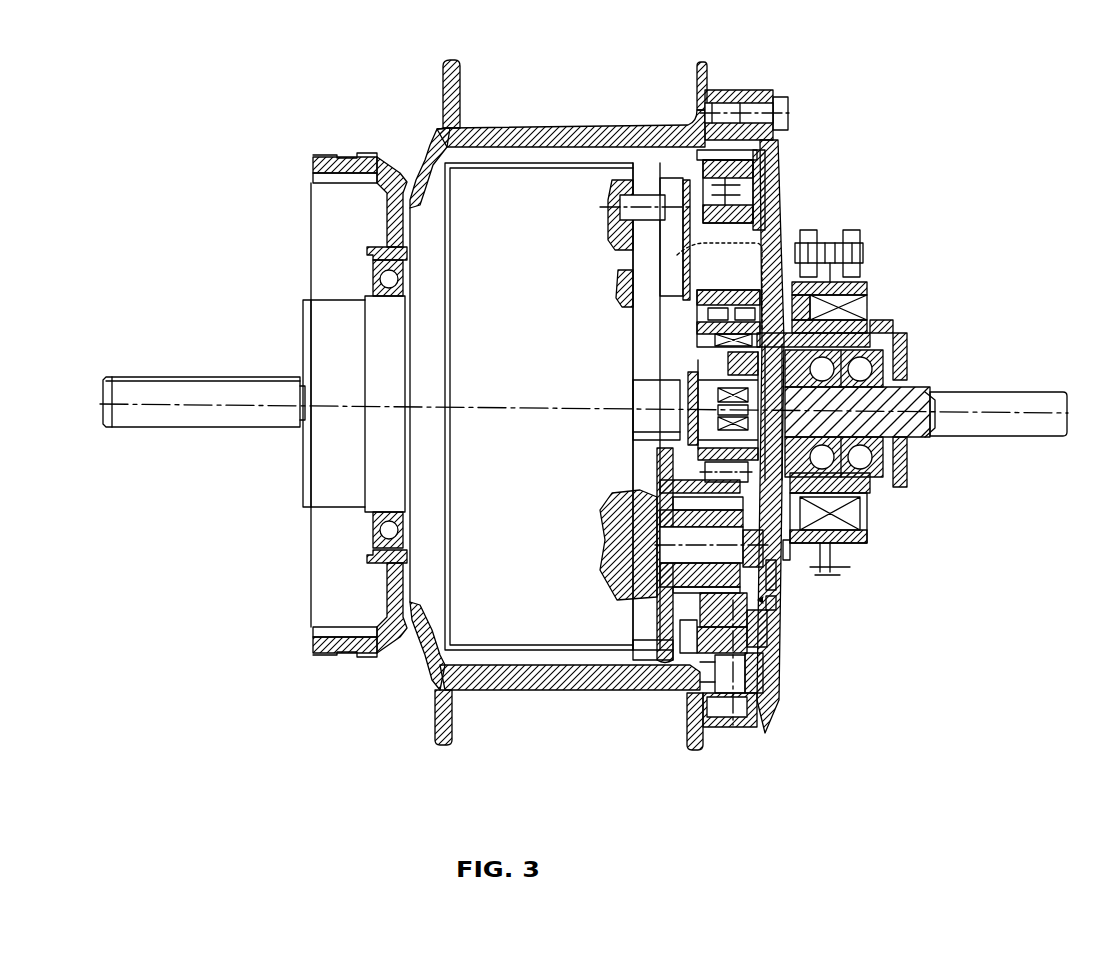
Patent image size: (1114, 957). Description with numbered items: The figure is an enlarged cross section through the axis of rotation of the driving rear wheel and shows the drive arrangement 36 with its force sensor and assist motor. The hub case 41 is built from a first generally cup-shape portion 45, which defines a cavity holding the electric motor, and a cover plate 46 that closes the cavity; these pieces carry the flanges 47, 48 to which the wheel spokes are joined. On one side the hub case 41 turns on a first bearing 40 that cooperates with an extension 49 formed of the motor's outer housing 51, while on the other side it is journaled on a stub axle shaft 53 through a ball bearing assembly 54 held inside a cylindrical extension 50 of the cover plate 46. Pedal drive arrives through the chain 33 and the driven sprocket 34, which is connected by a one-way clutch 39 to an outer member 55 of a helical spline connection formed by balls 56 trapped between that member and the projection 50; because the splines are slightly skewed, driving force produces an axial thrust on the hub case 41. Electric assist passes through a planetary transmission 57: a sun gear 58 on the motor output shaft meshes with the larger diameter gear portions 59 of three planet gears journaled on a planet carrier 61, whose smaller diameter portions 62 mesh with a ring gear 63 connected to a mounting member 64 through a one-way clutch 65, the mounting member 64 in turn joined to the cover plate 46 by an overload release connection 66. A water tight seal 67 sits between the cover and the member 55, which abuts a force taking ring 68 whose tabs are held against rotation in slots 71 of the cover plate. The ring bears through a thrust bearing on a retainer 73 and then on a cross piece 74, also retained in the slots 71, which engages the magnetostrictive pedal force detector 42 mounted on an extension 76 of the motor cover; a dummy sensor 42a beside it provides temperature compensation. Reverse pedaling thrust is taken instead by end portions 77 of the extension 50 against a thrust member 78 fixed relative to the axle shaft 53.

The chain 33 is at (848, 245).
The driven sprocket 34 is at (858, 268).
The drive arrangement 36 is at (893, 97).
The one-way clutch 39 is at (870, 297).
The first bearing 40 is at (377, 283).
The hub case 41 is at (418, 668).
The pedal force detector 42 is at (720, 375).
The dummy sensor 42a is at (727, 297).
The cup-shape portion 45 is at (442, 743).
The cover plate 46 is at (757, 727).
The flange 47 is at (456, 62).
The flange 48 is at (702, 62).
The extension 49 is at (338, 508).
The cylindrical extension 50 is at (887, 493).
The outer housing 51 is at (528, 692).
The stub axle shaft 53 is at (1005, 393).
The ball bearing assembly 54 is at (873, 458).
The outer member 55 is at (893, 325).
The balls 56 is at (870, 312).
The planetary transmission 57 is at (182, 378).
The sun gear 58 is at (633, 368).
The larger diameter gear portions 59 is at (655, 657).
The planet carrier 61 is at (775, 590).
The smaller diameter portions 62 is at (614, 667).
The ring gear 63 is at (775, 217).
The mounting member 64 is at (697, 163).
The one-way clutch 65 is at (762, 182).
The overload release connection 66 is at (757, 147).
The water tight seal 67 is at (838, 232).
The force taking ring 68 is at (843, 545).
The slots 71 is at (777, 575).
The retainer 73 is at (945, 428).
The cross piece 74 is at (680, 443).
The extension 76 is at (633, 448).
The end portions 77 is at (915, 352).
The thrust member 78 is at (915, 373).